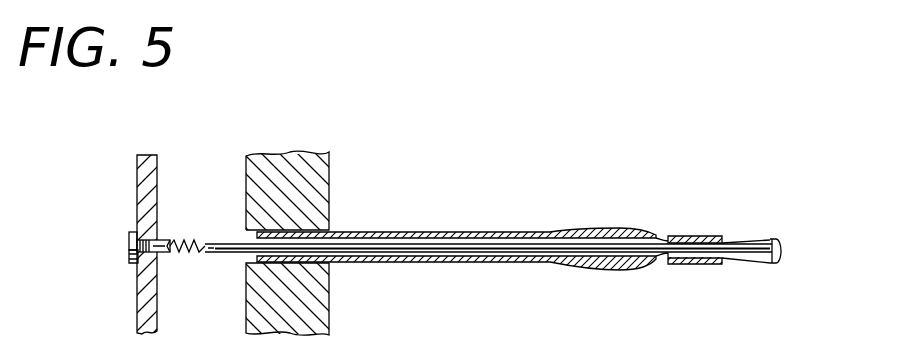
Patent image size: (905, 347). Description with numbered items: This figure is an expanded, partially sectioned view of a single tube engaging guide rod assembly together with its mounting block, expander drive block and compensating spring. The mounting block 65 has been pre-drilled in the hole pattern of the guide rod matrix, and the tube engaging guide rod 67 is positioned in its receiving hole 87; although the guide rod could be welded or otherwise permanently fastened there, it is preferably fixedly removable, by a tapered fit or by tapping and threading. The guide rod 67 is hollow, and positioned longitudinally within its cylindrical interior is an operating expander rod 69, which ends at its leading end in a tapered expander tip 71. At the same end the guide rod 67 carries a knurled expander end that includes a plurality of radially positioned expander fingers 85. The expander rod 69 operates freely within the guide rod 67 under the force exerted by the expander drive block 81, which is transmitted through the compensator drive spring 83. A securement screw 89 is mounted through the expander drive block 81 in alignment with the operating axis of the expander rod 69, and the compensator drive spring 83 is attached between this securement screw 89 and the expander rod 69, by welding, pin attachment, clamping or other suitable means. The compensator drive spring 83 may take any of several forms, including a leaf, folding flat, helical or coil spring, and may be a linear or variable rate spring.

The mounting block 65 is at (330, 164).
The tube engaging guide rod 67 is at (507, 243).
The expander rod 69 is at (515, 254).
The tapered expander tip 71 is at (768, 242).
The expander drive block 81 is at (142, 170).
The compensator drive spring 83 is at (191, 241).
The expander fingers 85 is at (682, 213).
The receiving hole 87 is at (332, 231).
The securement screw 89 is at (128, 238).